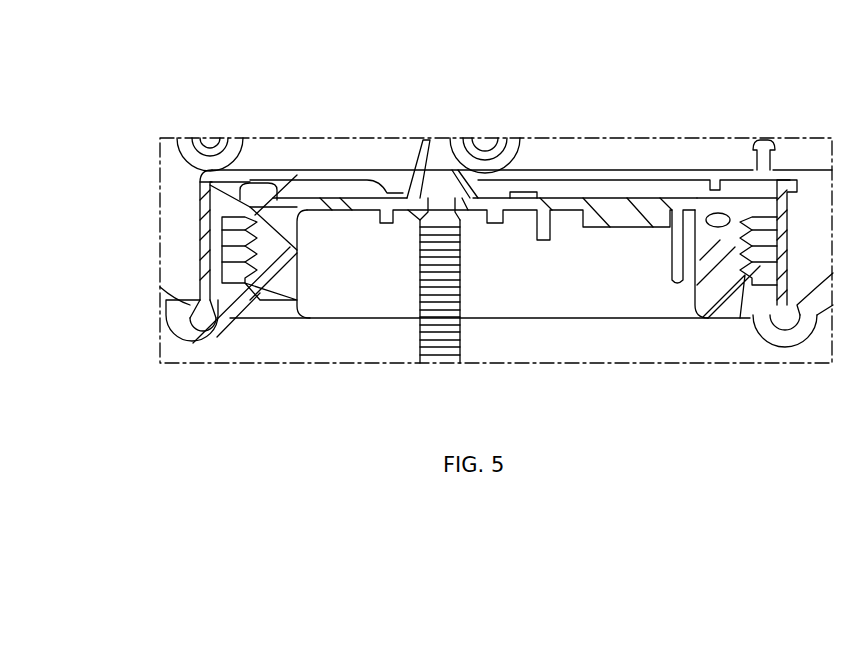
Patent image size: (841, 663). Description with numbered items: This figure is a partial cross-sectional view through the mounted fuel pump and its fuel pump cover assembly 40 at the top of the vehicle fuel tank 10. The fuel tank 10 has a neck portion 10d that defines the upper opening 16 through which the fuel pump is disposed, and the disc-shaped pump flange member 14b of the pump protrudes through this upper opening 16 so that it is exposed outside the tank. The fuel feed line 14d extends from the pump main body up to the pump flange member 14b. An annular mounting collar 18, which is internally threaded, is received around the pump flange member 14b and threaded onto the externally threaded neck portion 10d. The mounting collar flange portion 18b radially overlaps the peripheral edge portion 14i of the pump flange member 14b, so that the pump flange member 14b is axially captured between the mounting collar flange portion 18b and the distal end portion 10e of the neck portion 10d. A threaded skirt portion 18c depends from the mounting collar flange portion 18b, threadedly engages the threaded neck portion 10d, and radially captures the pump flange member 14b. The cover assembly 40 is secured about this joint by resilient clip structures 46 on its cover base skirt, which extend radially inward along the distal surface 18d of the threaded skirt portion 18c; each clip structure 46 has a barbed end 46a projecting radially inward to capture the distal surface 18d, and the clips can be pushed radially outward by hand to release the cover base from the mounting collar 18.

The vehicle fuel tank 10 is at (190, 338).
The neck portion 10d is at (677, 318).
The distal end portion 10e is at (298, 222).
The pump flange member 14b is at (613, 198).
The fuel feed line 14d is at (457, 280).
The peripheral edge portion 14i is at (200, 182).
The upper opening 16 is at (305, 290).
The mounting collar 18 is at (760, 210).
The mounting collar flange portion 18b is at (255, 172).
The threaded skirt portion 18c is at (233, 235).
The distal surface 18d is at (258, 245).
The fuel pump cover assembly 40 is at (193, 209).
The resilient clip structures 46 is at (200, 302).
The barbed end 46a is at (228, 297).